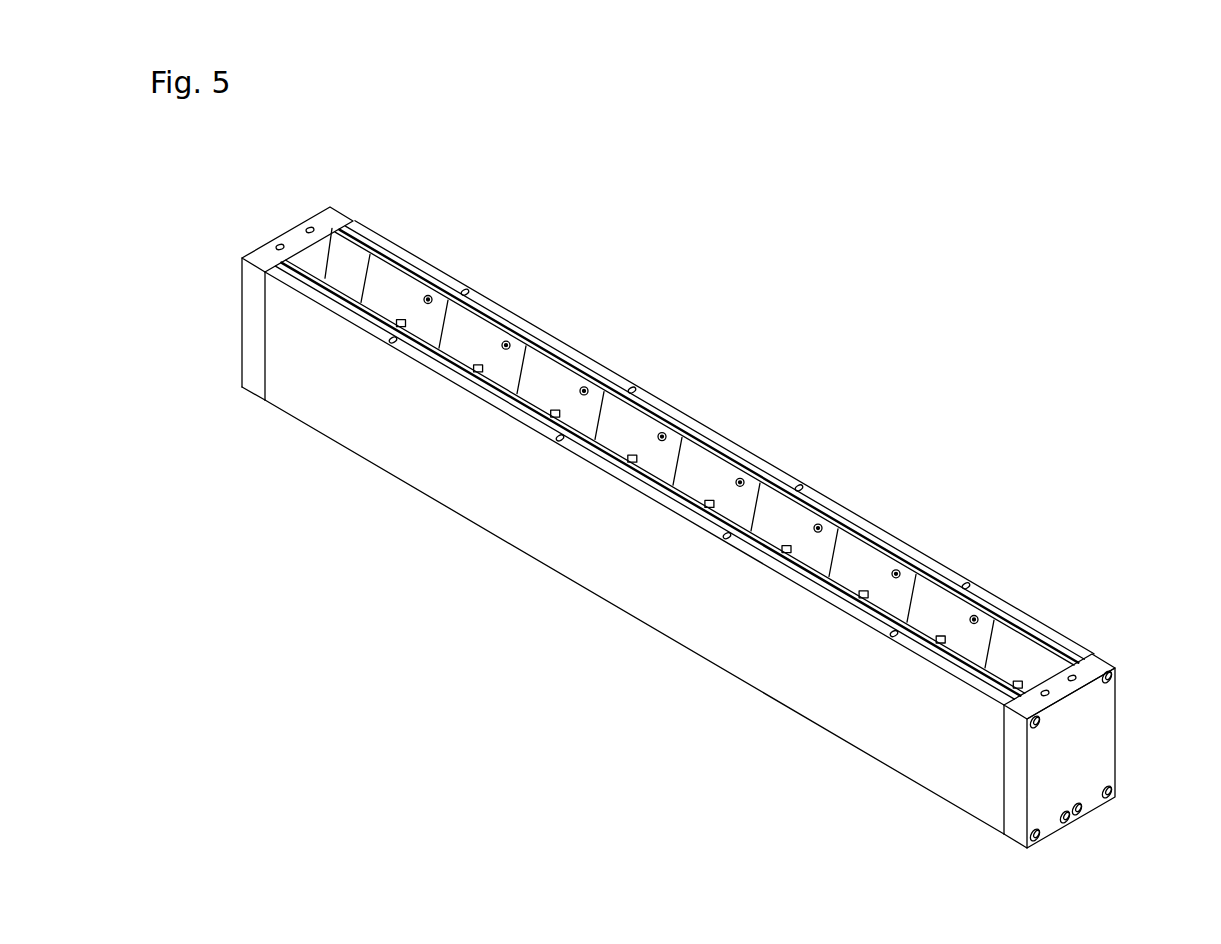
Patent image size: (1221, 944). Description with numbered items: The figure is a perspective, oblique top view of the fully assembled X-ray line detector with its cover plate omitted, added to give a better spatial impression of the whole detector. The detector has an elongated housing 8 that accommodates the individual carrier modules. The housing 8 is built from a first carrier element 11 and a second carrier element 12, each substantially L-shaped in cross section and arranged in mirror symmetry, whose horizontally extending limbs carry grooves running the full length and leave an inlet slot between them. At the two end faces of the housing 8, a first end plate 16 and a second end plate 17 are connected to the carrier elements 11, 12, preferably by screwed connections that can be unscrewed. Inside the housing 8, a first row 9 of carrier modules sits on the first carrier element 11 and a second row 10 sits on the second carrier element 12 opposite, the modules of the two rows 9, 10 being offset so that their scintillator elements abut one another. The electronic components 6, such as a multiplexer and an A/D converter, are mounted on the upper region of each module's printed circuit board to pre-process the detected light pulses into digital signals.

The electronic components 6 is at (712, 498).
The housing 8 is at (337, 447).
The first row 9 is at (902, 555).
The second row 10 is at (676, 493).
The first carrier element 11 is at (1031, 623).
The second carrier element 12 is at (912, 712).
The first end plate 16 is at (1067, 748).
The second end plate 17 is at (298, 237).